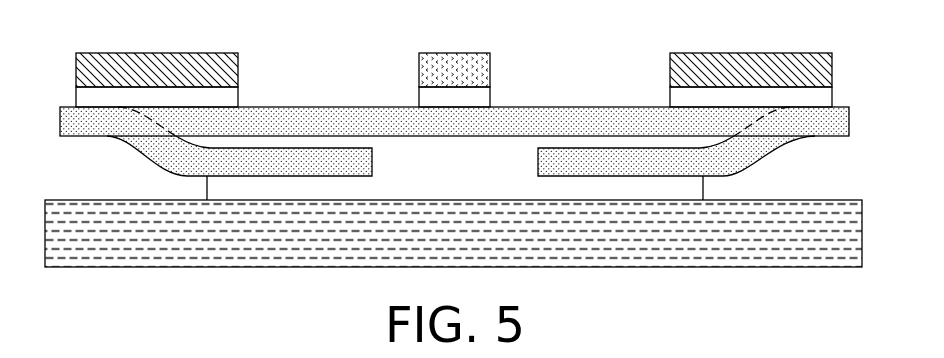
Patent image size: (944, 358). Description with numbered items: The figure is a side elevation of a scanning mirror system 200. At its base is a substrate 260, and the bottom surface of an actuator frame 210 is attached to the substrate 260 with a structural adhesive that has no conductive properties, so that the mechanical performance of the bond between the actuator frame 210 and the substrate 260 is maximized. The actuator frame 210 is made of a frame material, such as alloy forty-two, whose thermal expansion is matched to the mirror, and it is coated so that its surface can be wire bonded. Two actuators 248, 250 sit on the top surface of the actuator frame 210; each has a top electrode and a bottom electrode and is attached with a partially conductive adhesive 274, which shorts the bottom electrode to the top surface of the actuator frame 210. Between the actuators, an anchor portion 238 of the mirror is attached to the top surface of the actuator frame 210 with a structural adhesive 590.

The scanning mirror system 200 is at (178, 37).
The actuator frame 210 is at (840, 122).
The anchor portion 238 is at (490, 68).
The actuator 248 is at (83, 63).
The actuator 250 is at (826, 70).
The substrate 260 is at (826, 202).
The partially conductive adhesive 274 is at (85, 97).
The structural adhesive 590 is at (490, 95).